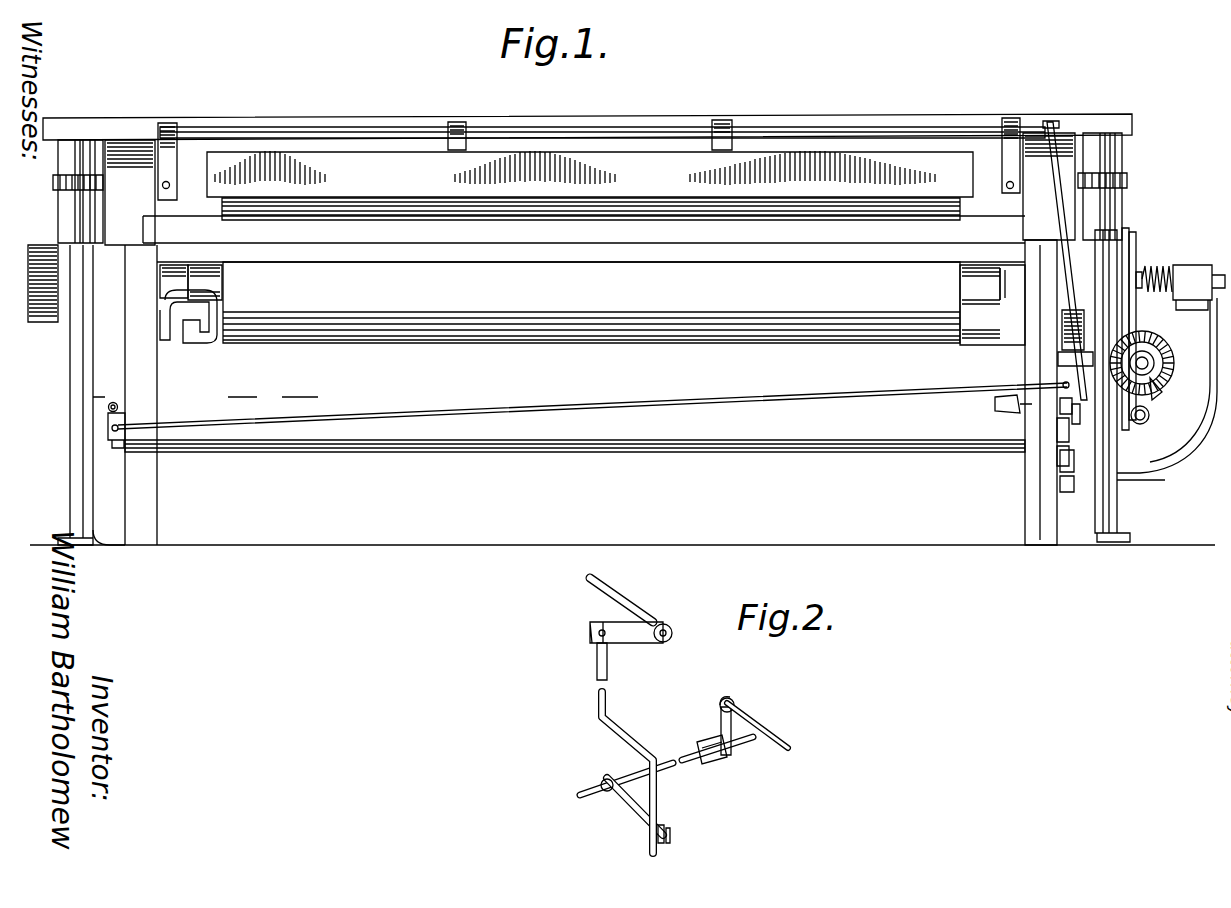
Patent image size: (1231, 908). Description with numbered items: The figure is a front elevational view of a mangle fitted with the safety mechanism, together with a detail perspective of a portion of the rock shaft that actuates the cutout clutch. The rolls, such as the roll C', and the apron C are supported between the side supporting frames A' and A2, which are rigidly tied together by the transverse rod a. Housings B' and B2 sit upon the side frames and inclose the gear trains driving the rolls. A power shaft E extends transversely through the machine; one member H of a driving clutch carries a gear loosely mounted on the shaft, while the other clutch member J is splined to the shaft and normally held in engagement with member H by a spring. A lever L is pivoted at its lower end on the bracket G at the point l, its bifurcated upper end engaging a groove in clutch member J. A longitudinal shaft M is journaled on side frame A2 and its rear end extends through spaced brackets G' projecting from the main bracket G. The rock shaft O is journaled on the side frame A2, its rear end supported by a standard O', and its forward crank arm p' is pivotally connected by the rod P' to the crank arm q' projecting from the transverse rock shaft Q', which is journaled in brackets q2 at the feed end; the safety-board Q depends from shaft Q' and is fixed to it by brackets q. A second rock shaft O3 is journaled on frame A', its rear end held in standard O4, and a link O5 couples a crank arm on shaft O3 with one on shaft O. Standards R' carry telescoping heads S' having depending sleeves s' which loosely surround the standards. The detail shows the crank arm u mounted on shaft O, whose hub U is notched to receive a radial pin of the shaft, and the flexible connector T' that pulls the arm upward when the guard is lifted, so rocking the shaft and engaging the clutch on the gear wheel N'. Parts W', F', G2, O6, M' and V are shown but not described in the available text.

In FIG. 1, the top cross bar W' is at (587, 105).
In FIG. 1, the transverse rock shaft Q' is at (602, 102).
In FIG. 2, the transverse rock shaft Q' is at (635, 600).
In FIG. 1, the brackets q2 is at (170, 127).
In FIG. 1, the brackets q is at (593, 112).
In FIG. 1, the housing B' is at (130, 156).
In FIG. 1, the housing B2 is at (1063, 133).
In FIG. 1, the crank arm q' is at (1062, 241).
In FIG. 2, the crank arm q' is at (631, 653).
In FIG. 1, the head S' is at (594, 188).
In FIG. 1, the depending sleeve s' is at (595, 192).
In FIG. 1, the gear wheel F' is at (36, 266).
In FIG. 1, the power shaft E is at (110, 292).
In FIG. 1, the standard R' is at (593, 387).
In FIG. 1, the side supporting frame A' is at (205, 391).
In FIG. 1, the rock shaft O3 is at (108, 409).
In FIG. 1, the standard O4 is at (112, 426).
In FIG. 1, the rock shaft O5 is at (508, 410).
In FIG. 1, the rod a is at (605, 444).
In FIG. 1, the safety-board Q is at (590, 174).
In FIG. 1, the apron C is at (591, 302).
In FIG. 1, the roll C' is at (937, 284).
In FIG. 1, the side supporting frame A2 is at (1035, 480).
In FIG. 1, the clutch member H is at (1130, 238).
In FIG. 1, the clutch member J is at (1130, 266).
In FIG. 1, the shaft M is at (1180, 268).
In FIG. 1, the lever L is at (1152, 352).
In FIG. 1, the spaced brackets G' is at (1168, 385).
In FIG. 1, the casing flange G2 is at (1155, 470).
In FIG. 1, the rod P' is at (1023, 339).
In FIG. 2, the rod P' is at (604, 772).
In FIG. 1, the gear wheel N' is at (1041, 370).
In FIG. 1, the stop block O6 is at (992, 404).
In FIG. 1, the rock shaft O is at (1008, 410).
In FIG. 2, the rock shaft O is at (679, 766).
In FIG. 1, the standard O' is at (1048, 442).
In FIG. 1, the crank arm p' is at (1081, 420).
In FIG. 2, the crank arm p' is at (622, 810).
In FIG. 1, the pawl M' is at (1171, 404).
In FIG. 1, the pivot l is at (1143, 424).
In FIG. 1, the bracket G is at (1076, 478).
In FIG. 2, the hub U is at (700, 745).
In FIG. 2, the link V is at (728, 752).
In FIG. 2, the crank arm u is at (722, 702).
In FIG. 2, the flexible connection T' is at (766, 715).